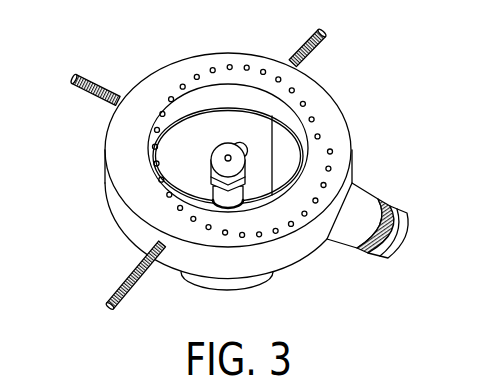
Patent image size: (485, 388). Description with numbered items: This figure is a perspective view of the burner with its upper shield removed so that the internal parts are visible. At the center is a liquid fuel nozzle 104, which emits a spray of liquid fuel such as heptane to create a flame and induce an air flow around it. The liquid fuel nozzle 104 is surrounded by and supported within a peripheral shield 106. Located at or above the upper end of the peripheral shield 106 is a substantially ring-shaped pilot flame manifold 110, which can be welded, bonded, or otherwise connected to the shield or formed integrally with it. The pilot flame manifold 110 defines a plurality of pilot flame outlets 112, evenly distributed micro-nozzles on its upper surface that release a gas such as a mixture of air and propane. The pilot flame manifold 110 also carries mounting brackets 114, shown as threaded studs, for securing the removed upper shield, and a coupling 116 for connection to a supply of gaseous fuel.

The liquid fuel nozzle 104 is at (212, 193).
The peripheral shield 106 is at (195, 135).
The pilot flame manifold 110 is at (362, 104).
The pilot flame outlets 112 is at (262, 70).
The mounting brackets 114 is at (86, 93).
The coupling 116 is at (402, 208).